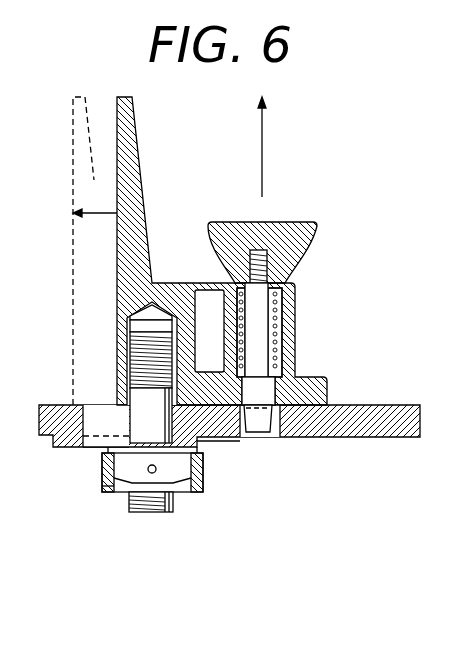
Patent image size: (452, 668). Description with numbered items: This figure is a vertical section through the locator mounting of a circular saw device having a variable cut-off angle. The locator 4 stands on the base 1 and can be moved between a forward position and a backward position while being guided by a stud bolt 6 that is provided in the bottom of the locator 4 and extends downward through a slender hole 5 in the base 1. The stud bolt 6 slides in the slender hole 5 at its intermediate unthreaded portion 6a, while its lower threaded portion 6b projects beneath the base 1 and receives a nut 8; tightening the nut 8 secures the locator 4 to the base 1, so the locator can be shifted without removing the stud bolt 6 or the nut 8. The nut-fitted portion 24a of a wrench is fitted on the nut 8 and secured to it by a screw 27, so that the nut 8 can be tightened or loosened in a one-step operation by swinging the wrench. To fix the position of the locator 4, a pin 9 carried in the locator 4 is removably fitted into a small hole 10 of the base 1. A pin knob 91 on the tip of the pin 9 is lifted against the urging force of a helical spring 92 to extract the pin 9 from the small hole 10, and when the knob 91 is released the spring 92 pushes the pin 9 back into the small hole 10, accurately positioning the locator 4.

The base 1 is at (383, 437).
The locator 4 is at (137, 147).
The slender hole 5 is at (100, 416).
The stud bolt 6 is at (118, 337).
The intermediate unthreaded portion 6a is at (131, 487).
The lower threaded portion 6b is at (177, 498).
The nut 8 is at (115, 465).
The pin 9 is at (283, 387).
The small hole 10 is at (213, 441).
The nut-fitted portion 24a is at (108, 493).
The screw 27 is at (152, 477).
The pin knob 91 is at (317, 232).
The helical spring 92 is at (270, 310).